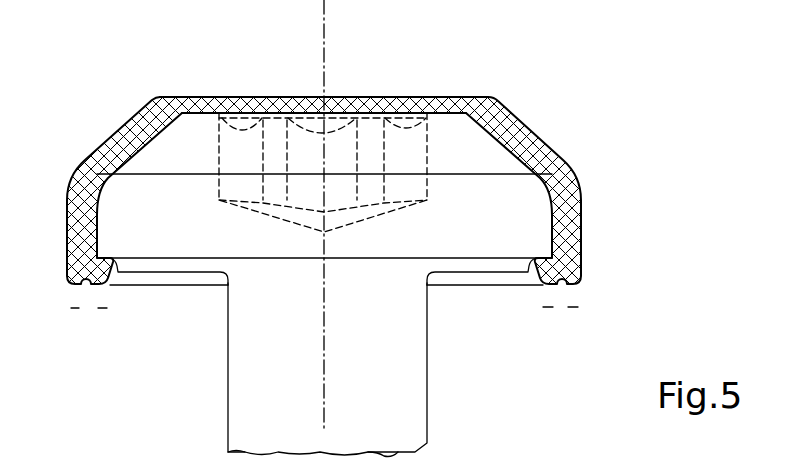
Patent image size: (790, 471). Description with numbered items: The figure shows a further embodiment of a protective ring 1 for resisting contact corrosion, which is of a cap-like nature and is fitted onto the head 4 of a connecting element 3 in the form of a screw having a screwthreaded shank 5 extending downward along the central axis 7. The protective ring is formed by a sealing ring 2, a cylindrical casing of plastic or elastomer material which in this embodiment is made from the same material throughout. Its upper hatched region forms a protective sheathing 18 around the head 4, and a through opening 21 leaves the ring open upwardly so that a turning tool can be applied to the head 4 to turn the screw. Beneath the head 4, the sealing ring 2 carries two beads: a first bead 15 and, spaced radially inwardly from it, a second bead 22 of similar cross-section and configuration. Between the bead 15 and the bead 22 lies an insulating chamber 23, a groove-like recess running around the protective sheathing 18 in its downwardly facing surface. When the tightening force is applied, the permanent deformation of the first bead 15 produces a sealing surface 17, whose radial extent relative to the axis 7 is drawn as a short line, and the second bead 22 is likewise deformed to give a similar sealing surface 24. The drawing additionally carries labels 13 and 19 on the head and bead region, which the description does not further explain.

The protective ring 1 is at (578, 101).
The sealing ring 2 is at (572, 218).
The connecting element 3 is at (450, 98).
The head 4 is at (204, 123).
The screwthreaded shank 5 is at (242, 366).
The axis 7 is at (324, 86).
The flange plate 13 is at (160, 273).
The first bead 15 is at (72, 287).
The sealing surface 17 is at (102, 310).
The protective sheathing 18 is at (128, 133).
The retaining lip 19 is at (535, 261).
The through opening 21 is at (401, 105).
The second bead 22 is at (98, 286).
The insulating chamber 23 is at (565, 283).
The sealing surface 24 is at (75, 310).